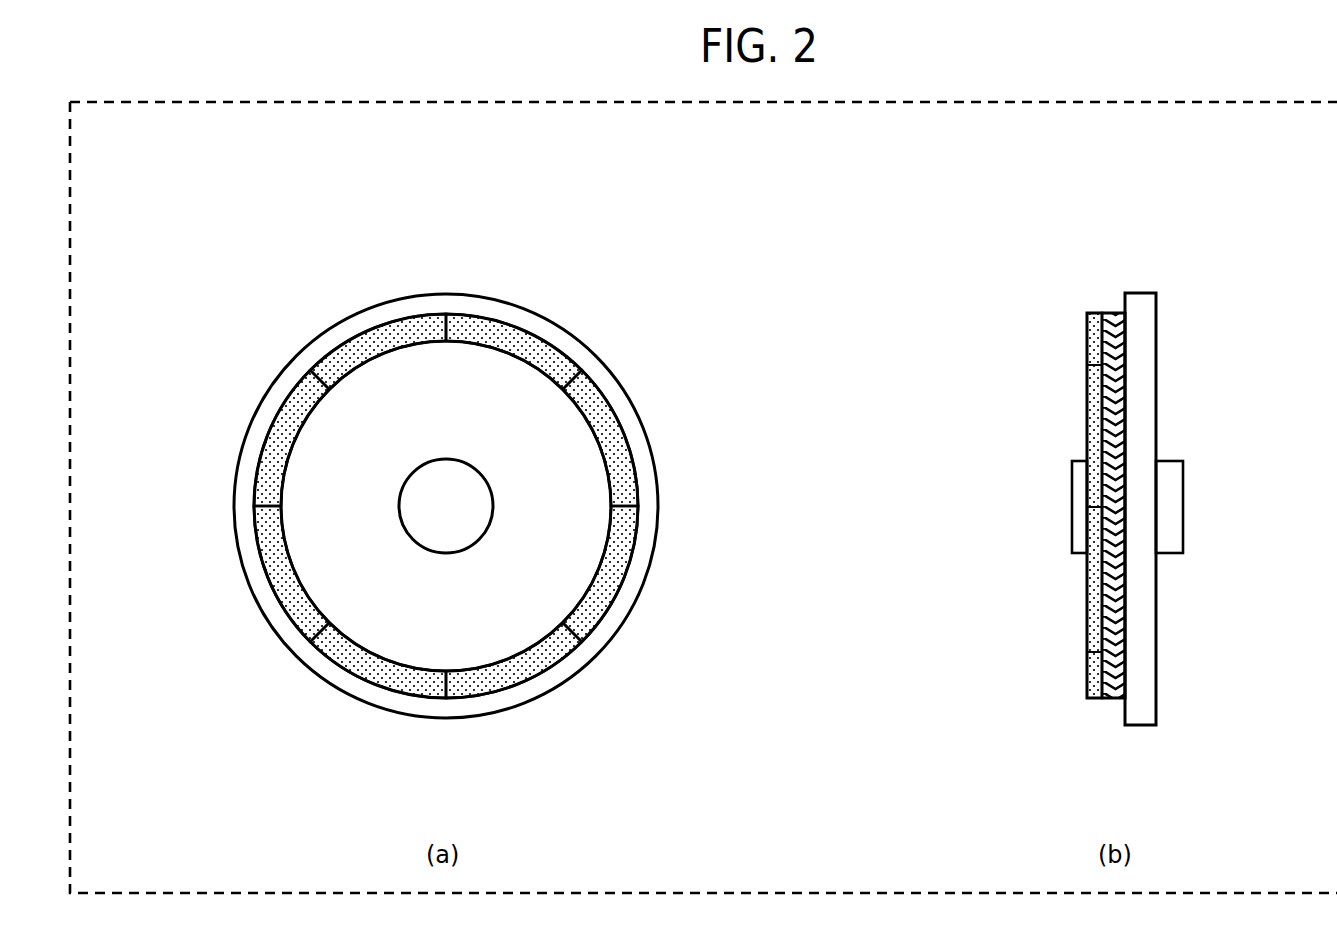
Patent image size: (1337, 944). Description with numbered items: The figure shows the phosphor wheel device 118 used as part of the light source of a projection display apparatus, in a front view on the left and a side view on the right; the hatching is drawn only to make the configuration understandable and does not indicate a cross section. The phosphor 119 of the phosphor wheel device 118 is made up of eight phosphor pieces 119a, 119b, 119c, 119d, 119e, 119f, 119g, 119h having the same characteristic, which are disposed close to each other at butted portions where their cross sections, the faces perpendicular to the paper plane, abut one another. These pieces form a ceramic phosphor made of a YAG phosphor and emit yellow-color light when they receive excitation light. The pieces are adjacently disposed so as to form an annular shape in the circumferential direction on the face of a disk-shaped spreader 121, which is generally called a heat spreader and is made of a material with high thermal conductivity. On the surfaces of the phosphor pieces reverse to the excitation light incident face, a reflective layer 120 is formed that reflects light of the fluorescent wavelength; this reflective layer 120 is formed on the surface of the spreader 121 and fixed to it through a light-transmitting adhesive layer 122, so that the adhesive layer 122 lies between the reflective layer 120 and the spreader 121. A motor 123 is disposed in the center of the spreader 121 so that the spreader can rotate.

The phosphor wheel device 118 is at (445, 265).
The phosphor 119 is at (288, 393).
The phosphor piece 119a is at (542, 347).
The phosphor piece 119b is at (605, 443).
The phosphor piece 119c is at (610, 577).
The phosphor piece 119d is at (532, 667).
The phosphor piece 119e is at (362, 665).
The phosphor piece 119f is at (278, 575).
The phosphor piece 119g is at (277, 440).
The phosphor piece 119h is at (333, 362).
The reflective layer 120 is at (1105, 699).
The spreader 121 is at (597, 372).
The adhesive layer 122 is at (1122, 315).
The motor 123 is at (450, 502).